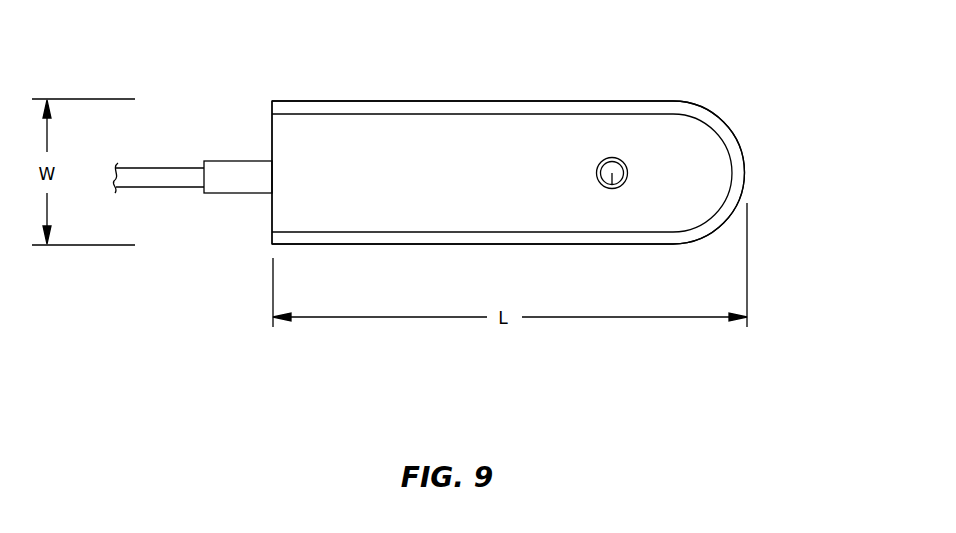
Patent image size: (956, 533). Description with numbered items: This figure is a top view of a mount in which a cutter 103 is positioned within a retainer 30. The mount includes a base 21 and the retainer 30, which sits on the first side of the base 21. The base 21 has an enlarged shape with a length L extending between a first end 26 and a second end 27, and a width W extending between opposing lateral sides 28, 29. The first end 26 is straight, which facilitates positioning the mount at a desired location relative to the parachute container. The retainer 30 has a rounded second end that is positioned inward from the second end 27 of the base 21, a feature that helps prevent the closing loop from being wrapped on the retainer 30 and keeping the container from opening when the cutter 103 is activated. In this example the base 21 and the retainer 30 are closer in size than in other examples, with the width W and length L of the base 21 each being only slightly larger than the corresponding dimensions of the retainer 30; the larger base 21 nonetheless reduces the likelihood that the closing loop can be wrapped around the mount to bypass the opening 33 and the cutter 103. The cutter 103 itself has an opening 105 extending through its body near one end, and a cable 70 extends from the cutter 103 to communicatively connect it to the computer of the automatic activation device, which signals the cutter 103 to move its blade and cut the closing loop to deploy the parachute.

The base 21 is at (622, 108).
The first end 26 is at (272, 215).
The second end 27 is at (745, 173).
The lateral side 28 is at (662, 248).
The lateral side 29 is at (395, 100).
The retainer 30 is at (470, 170).
The opening 33 is at (626, 163).
The cable 70 is at (177, 177).
The cutter 103 is at (257, 170).
The opening 105 is at (612, 178).